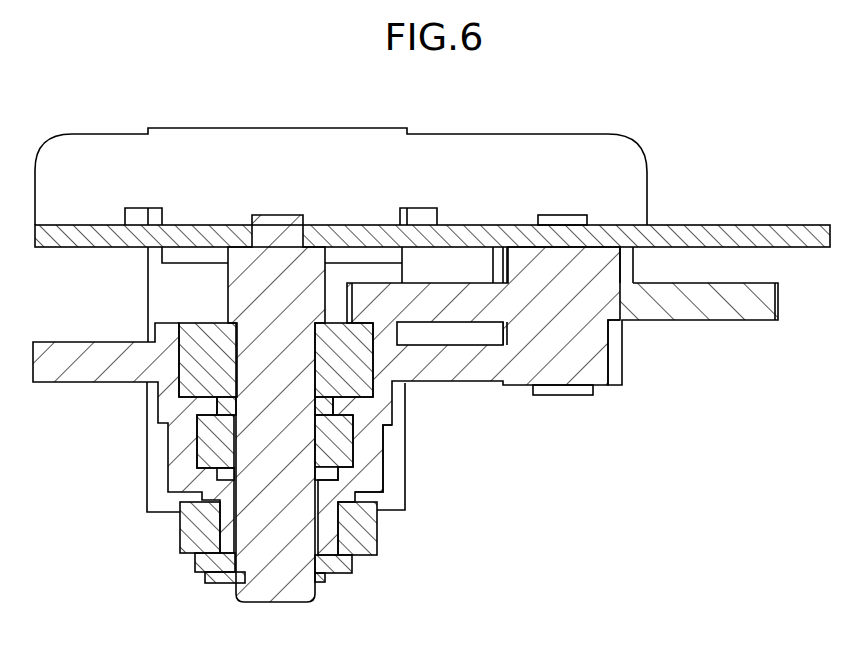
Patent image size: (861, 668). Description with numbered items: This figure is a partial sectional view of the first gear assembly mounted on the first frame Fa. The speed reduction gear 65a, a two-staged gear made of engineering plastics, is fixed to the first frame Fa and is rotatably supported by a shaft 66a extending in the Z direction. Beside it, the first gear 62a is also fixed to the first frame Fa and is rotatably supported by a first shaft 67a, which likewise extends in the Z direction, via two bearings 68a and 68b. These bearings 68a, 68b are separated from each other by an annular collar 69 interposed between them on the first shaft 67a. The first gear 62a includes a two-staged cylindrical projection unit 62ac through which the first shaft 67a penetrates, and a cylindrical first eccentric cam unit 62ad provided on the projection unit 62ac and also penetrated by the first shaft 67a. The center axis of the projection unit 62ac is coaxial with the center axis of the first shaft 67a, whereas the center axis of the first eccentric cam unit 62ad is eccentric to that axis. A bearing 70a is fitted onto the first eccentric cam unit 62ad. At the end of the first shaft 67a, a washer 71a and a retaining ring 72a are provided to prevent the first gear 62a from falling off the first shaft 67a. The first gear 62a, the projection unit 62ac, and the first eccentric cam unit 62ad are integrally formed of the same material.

The first frame Fa is at (800, 225).
The shaft 66a is at (562, 213).
The first shaft 67a is at (273, 213).
The bearing 68a is at (190, 340).
The annular collar 69 is at (215, 407).
The bearing 68b is at (200, 445).
The bearing 70a is at (178, 527).
The washer 71a is at (195, 565).
The retaining ring 72a is at (225, 585).
The first gear 62a is at (462, 390).
The projection unit 62ac is at (385, 447).
The first eccentric cam unit 62ad is at (345, 527).
The speed reduction gear 65a is at (665, 322).